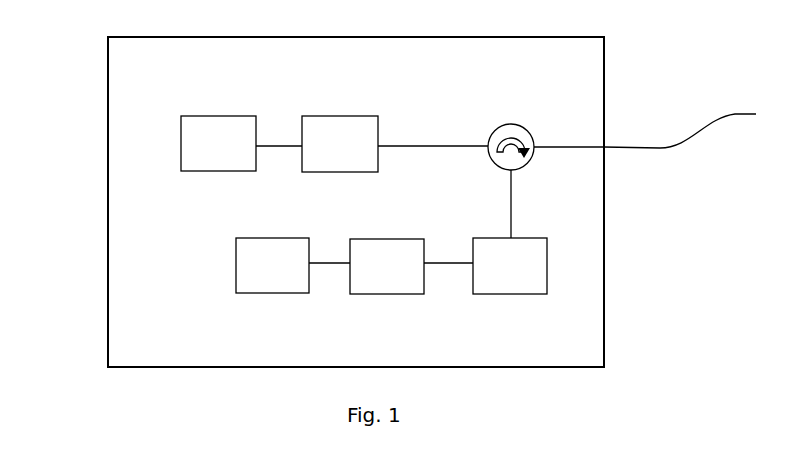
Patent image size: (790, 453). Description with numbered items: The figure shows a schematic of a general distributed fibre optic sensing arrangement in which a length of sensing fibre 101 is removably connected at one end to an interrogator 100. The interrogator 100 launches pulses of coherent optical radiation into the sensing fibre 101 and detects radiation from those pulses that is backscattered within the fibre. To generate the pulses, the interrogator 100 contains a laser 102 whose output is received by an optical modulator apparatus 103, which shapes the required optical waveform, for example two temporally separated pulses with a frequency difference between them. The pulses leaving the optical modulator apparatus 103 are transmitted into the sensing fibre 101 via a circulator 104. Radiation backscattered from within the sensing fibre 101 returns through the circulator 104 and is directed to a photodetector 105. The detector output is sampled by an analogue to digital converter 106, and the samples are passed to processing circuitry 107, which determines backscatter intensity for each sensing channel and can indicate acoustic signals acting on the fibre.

The interrogator 100 is at (84, 90).
The sensing fibre 101 is at (718, 115).
The laser 102 is at (203, 145).
The optical modulator apparatus 103 is at (324, 146).
The circulator 104 is at (504, 125).
The photodetector 105 is at (494, 267).
The analogue to digital converter 106 is at (372, 267).
The processing circuitry 107 is at (257, 267).